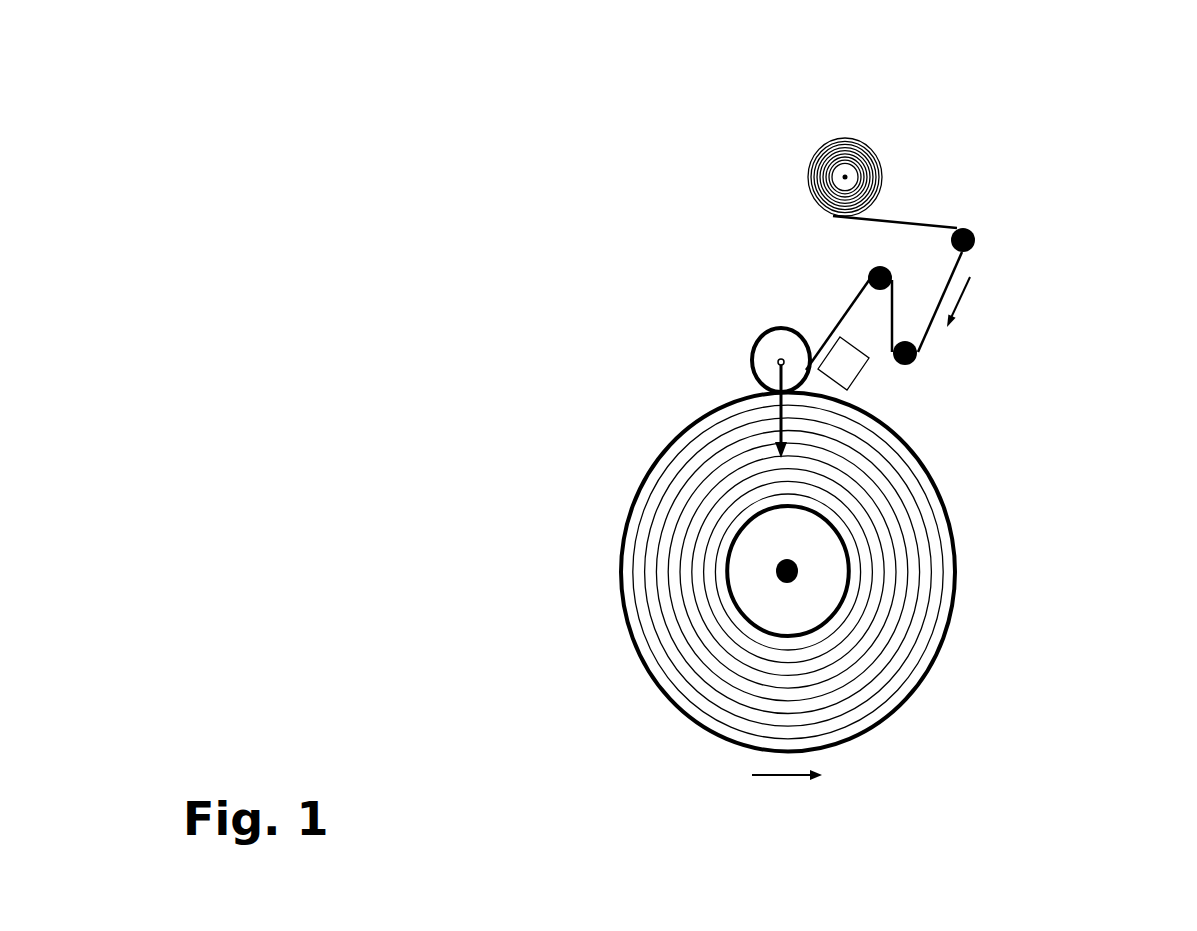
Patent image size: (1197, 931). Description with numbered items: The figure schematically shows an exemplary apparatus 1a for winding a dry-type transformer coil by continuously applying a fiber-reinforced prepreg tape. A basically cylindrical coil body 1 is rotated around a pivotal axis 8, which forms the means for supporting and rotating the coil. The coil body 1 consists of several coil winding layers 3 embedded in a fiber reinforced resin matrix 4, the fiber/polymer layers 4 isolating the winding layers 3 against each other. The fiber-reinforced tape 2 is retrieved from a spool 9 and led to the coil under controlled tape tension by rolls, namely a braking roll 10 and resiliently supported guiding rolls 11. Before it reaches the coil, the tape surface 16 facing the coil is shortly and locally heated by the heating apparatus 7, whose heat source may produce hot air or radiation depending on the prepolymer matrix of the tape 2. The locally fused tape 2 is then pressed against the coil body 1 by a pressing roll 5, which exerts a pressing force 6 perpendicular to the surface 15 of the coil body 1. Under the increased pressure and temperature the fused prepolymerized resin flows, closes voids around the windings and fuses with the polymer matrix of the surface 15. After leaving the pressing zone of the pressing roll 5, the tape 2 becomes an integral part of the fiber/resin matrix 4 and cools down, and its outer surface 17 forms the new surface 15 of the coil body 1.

The apparatus 1a is at (512, 95).
The coil body 1 is at (634, 613).
The fiber-reinforced tape 2 is at (845, 202).
The coil winding layers 3 is at (892, 630).
The fiber reinforced resin matrix 4 is at (685, 522).
The pressing roll 5 is at (763, 358).
The pressing force 6 is at (773, 427).
The heating apparatus 7 is at (845, 365).
The pivotal axis 8 is at (807, 573).
The spool 9 is at (843, 130).
The braking roll 10 is at (982, 235).
The resiliently supported guiding rolls 11 is at (897, 277).
The surface of the coil body 15 is at (650, 696).
The tape surface 16 is at (1017, 387).
The outer surface 17 is at (739, 185).